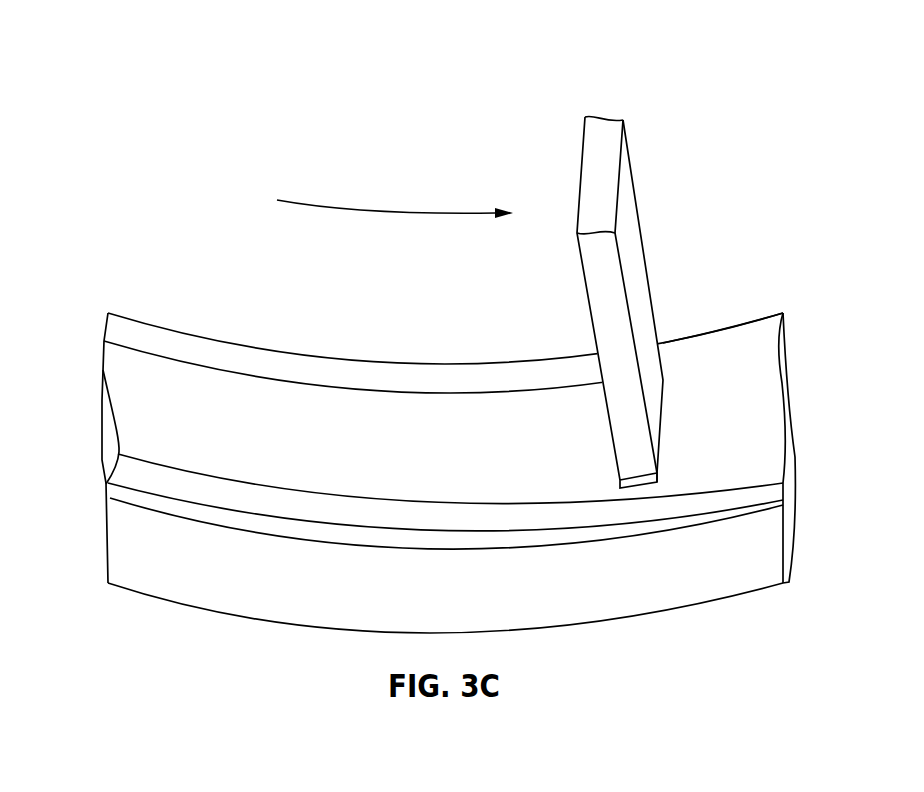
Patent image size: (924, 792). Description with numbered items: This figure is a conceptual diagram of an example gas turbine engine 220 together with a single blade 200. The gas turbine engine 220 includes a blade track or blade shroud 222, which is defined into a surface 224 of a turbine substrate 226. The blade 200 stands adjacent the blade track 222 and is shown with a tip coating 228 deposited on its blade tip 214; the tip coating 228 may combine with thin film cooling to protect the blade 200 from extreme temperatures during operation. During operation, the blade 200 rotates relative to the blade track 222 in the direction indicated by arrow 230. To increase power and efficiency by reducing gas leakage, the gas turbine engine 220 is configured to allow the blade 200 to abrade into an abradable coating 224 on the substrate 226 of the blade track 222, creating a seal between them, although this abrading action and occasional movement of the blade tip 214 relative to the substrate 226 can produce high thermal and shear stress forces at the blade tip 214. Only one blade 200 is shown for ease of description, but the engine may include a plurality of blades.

The gas turbine engine 220 is at (178, 63).
The blade track 222 is at (210, 307).
The surface 224 is at (740, 338).
The turbine substrate 226 is at (118, 543).
The tip coating 228 is at (620, 488).
The blade 200 is at (666, 217).
The blade tip 214 is at (663, 432).
The arrow 230 is at (358, 212).